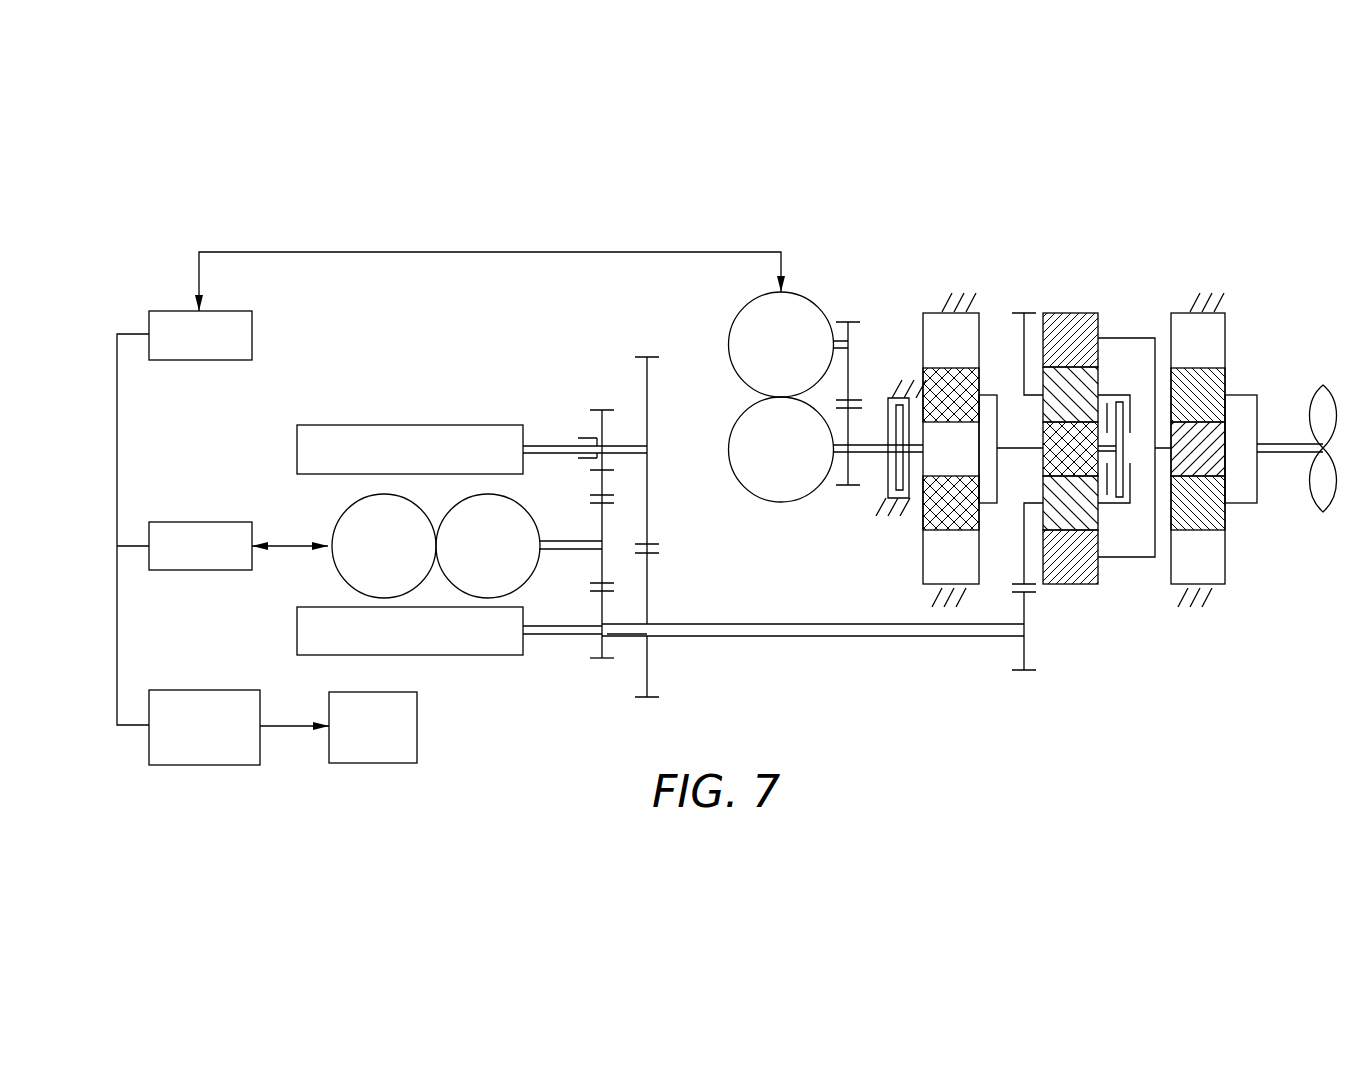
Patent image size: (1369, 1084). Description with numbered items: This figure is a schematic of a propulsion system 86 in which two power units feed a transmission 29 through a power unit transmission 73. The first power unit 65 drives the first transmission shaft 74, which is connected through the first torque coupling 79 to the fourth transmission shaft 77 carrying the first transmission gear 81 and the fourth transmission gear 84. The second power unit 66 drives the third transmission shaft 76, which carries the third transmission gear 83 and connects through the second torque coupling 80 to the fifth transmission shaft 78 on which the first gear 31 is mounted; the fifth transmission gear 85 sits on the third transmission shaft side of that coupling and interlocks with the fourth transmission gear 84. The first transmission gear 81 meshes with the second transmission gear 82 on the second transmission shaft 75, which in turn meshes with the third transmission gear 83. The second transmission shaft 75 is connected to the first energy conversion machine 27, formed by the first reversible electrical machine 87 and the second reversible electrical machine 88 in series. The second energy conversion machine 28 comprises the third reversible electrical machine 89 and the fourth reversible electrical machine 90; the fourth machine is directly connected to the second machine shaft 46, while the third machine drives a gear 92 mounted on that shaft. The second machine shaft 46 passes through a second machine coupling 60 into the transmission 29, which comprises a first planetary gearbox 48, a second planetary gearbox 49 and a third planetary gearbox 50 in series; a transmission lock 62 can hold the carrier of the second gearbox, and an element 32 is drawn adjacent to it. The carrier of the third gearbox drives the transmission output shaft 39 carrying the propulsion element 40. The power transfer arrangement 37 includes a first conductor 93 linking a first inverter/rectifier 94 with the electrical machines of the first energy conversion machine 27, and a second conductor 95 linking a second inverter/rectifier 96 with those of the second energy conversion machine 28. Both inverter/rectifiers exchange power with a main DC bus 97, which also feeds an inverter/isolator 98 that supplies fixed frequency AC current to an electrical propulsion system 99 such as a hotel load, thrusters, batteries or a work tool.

The first energy conversion machine 27 is at (310, 568).
The second energy conversion machine 28 is at (720, 307).
The transmission 29 is at (1019, 270).
The first gear 31 is at (1024, 655).
The clutch hub 32 is at (1028, 503).
The power transfer arrangement 37 is at (150, 258).
The transmission output shaft 39 is at (1283, 444).
The propulsion element 40 is at (1323, 385).
The second machine shaft 46 is at (880, 456).
The first planetary gearbox 48 is at (932, 313).
The second planetary gearbox 49 is at (1072, 313).
The third planetary gearbox 50 is at (1225, 330).
The second machine coupling 60 is at (893, 396).
The transmission lock 62 is at (1117, 395).
The first power unit 65 is at (410, 425).
The second power unit 66 is at (465, 655).
The power unit transmission 73 is at (618, 377).
The first transmission shaft 74 is at (540, 446).
The second transmission shaft 75 is at (560, 550).
The third transmission shaft 76 is at (540, 636).
The fourth transmission shaft 77 is at (628, 446).
The fifth transmission shaft 78 is at (738, 624).
The first torque coupling 79 is at (586, 438).
The second torque coupling 80 is at (628, 640).
The first transmission gear 81 is at (600, 474).
The second transmission gear 82 is at (600, 514).
The third transmission gear 83 is at (596, 656).
The fourth transmission gear 84 is at (648, 415).
The fifth transmission gear 85 is at (650, 552).
The propulsion system 86 is at (1090, 720).
The first reversible electrical machine 87 is at (527, 576).
The second reversible electrical machine 88 is at (338, 572).
The third reversible electrical machine 89 is at (732, 376).
The fourth reversible electrical machine 90 is at (732, 479).
The gear 92 is at (845, 480).
The first conductor 93 is at (292, 540).
The first inverter/rectifier 94 is at (203, 522).
The second conductor 95 is at (497, 252).
The second inverter/rectifier 96 is at (203, 360).
The main DC bus 97 is at (117, 447).
The inverter/isolator 98 is at (203, 765).
The electrical propulsion system 99 is at (373, 763).